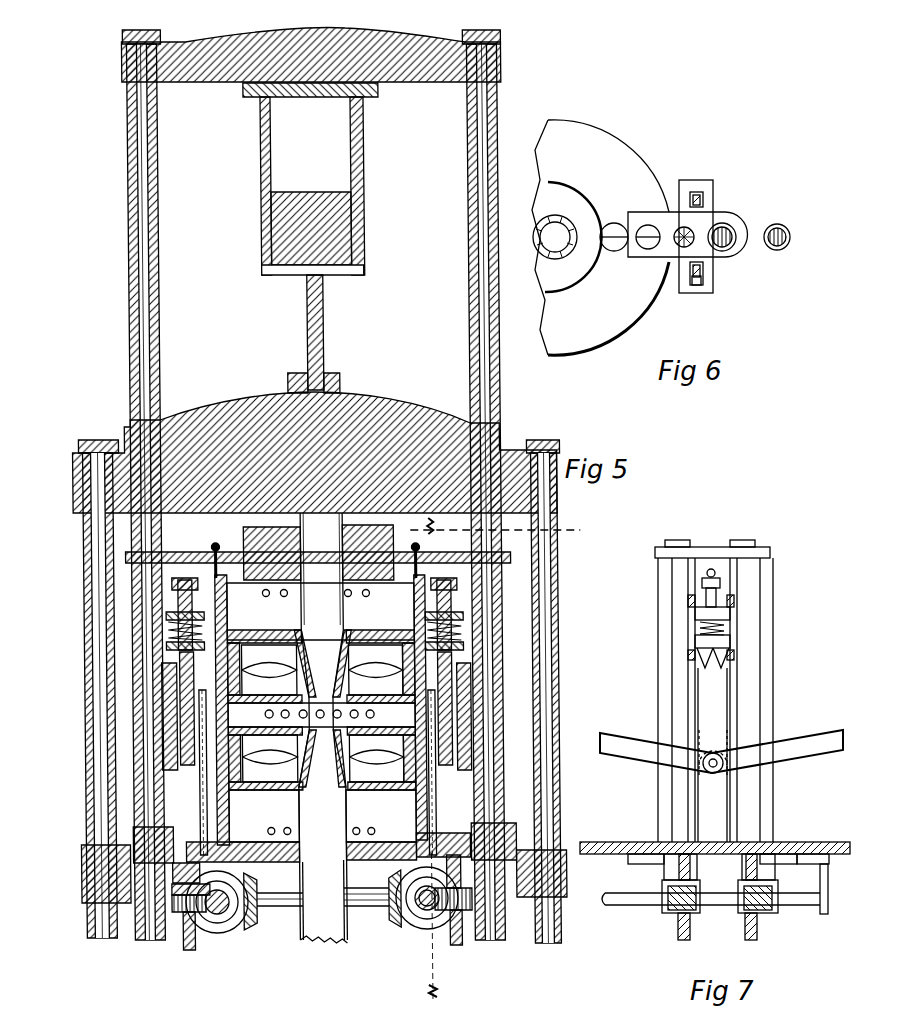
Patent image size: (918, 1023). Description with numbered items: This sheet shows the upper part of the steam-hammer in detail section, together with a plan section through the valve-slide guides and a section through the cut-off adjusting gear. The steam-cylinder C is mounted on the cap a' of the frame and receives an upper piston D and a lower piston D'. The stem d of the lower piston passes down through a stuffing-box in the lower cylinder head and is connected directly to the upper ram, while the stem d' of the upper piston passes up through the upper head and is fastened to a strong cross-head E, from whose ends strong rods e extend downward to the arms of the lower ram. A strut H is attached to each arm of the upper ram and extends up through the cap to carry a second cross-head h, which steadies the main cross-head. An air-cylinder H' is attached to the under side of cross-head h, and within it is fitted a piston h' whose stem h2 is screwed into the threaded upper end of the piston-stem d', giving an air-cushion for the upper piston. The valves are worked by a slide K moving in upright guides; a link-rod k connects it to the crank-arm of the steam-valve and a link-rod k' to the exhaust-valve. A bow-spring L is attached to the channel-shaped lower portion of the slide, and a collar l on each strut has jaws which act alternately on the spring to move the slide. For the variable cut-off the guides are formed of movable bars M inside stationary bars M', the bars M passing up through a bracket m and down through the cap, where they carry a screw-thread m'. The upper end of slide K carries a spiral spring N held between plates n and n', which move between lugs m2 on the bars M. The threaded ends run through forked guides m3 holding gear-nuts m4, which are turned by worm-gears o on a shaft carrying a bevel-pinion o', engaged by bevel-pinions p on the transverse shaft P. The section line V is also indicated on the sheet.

In FIG. 5, the second cross-head h is at (321, 55).
In FIG. 5, the strut H is at (315, 485).
In FIG. 6, the strut H is at (728, 212).
In FIG. 5, the air-cylinder H' is at (318, 179).
In FIG. 5, the piston h' is at (326, 233).
In FIG. 5, the stem h2 is at (325, 318).
In FIG. 5, the cross-head E is at (314, 445).
In FIG. 5, the rod e is at (98, 440).
In FIG. 6, the rod e is at (788, 224).
In FIG. 5, the steam-cylinder C is at (318, 552).
In FIG. 6, the steam-cylinder C is at (600, 237).
In FIG. 5, the section line V is at (495, 530).
In FIG. 5, the stem of the upper piston d' is at (321, 726).
In FIG. 6, the stem of the upper piston d' is at (555, 237).
In FIG. 5, the upper piston D is at (321, 672).
In FIG. 5, the lower piston D' is at (327, 794).
In FIG. 5, the stem of the lower piston d is at (324, 921).
In FIG. 5, the stops or lugs m2 is at (462, 600).
In FIG. 7, the stops or lugs m2 is at (688, 602).
In FIG. 5, the plate n is at (383, 600).
In FIG. 7, the plate n is at (748, 594).
In FIG. 5, the spiral spring N is at (462, 634).
In FIG. 7, the spiral spring N is at (725, 628).
In FIG. 7, the plate n' is at (750, 649).
In FIG. 5, the collar l is at (500, 673).
In FIG. 5, the bow-spring L is at (468, 730).
In FIG. 5, the slide K is at (458, 803).
In FIG. 6, the slide K is at (682, 228).
In FIG. 7, the slide K is at (713, 745).
In FIG. 5, the worm-gear o is at (330, 924).
In FIG. 7, the worm-gear o is at (711, 914).
In FIG. 5, the bevel-pinion o' is at (420, 926).
In FIG. 5, the bevel-pinion p is at (250, 920).
In FIG. 5, the horizontal shaft P is at (366, 907).
In FIG. 5, the gear-nut m4 is at (180, 905).
In FIG. 5, the screw-thread m' is at (349, 960).
In FIG. 7, the screw-thread m' is at (725, 915).
In FIG. 6, the bracket m is at (713, 236).
In FIG. 7, the bracket m is at (727, 550).
In FIG. 6, the movable bar M is at (686, 241).
In FIG. 7, the movable bar M is at (715, 700).
In FIG. 6, the stationary bar M' is at (712, 301).
In FIG. 7, the stationary bar M' is at (721, 700).
In FIG. 7, the link-rod k is at (721, 747).
In FIG. 7, the link-rod k' is at (624, 733).
In FIG. 7, the cap a' is at (715, 837).
In FIG. 7, the forked guide m3 is at (663, 917).